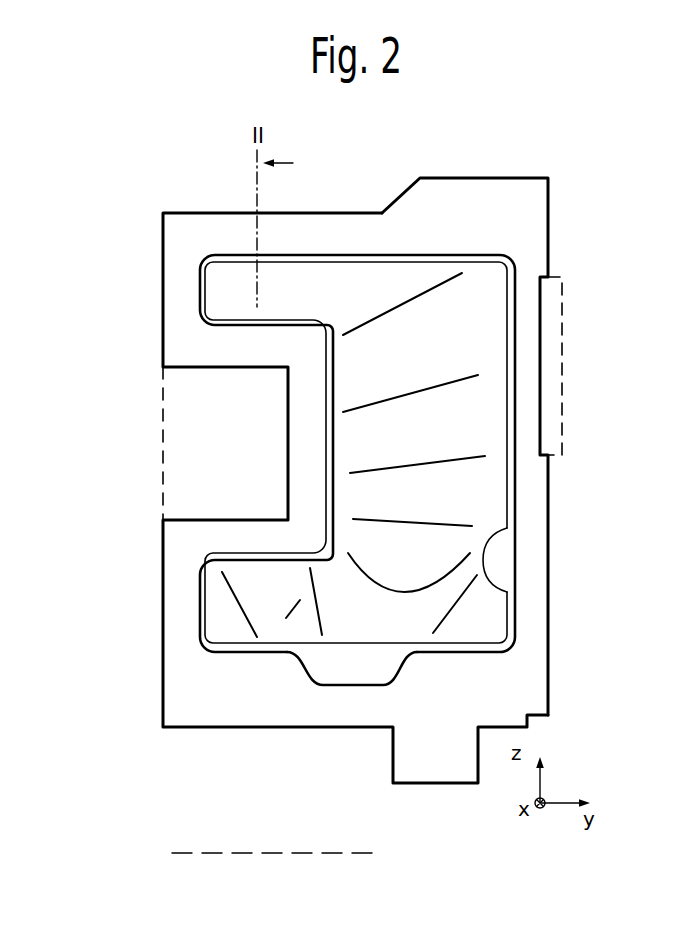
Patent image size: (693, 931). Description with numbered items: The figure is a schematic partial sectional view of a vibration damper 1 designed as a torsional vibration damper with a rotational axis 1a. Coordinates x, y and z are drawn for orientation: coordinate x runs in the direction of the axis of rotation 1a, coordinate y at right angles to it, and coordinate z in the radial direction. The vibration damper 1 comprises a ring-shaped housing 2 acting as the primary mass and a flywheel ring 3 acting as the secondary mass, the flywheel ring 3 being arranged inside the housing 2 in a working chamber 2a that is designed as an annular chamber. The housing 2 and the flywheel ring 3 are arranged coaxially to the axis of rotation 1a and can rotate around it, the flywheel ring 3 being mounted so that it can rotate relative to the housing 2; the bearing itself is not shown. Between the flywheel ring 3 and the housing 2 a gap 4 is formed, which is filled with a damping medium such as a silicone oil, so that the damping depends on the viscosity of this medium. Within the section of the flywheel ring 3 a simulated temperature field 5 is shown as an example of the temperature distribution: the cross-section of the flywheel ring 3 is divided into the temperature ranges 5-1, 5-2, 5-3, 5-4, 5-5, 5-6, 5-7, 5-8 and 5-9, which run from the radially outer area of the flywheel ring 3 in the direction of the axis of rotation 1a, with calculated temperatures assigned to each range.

The vibration damper 1 is at (348, 432).
The rotational axis 1a is at (183, 853).
The housing 2 is at (502, 215).
The working chamber 2a is at (516, 560).
The flywheel ring 3 is at (344, 658).
The gap 4 is at (422, 470).
The temperature field 5 is at (164, 195).
The temperature range 5-1 is at (305, 295).
The temperature range 5-2 is at (363, 380).
The temperature range 5-3 is at (370, 442).
The temperature range 5-4 is at (370, 493).
The temperature range 5-5 is at (422, 548).
The temperature range 5-6 is at (390, 615).
The temperature range 5-7 is at (472, 607).
The temperature range 5-8 is at (293, 607).
The temperature range 5-9 is at (222, 604).